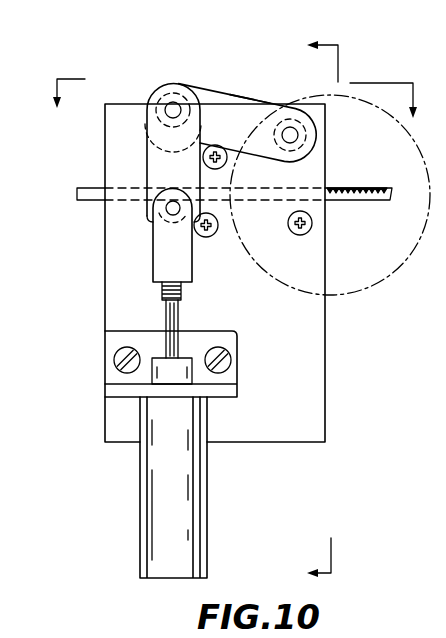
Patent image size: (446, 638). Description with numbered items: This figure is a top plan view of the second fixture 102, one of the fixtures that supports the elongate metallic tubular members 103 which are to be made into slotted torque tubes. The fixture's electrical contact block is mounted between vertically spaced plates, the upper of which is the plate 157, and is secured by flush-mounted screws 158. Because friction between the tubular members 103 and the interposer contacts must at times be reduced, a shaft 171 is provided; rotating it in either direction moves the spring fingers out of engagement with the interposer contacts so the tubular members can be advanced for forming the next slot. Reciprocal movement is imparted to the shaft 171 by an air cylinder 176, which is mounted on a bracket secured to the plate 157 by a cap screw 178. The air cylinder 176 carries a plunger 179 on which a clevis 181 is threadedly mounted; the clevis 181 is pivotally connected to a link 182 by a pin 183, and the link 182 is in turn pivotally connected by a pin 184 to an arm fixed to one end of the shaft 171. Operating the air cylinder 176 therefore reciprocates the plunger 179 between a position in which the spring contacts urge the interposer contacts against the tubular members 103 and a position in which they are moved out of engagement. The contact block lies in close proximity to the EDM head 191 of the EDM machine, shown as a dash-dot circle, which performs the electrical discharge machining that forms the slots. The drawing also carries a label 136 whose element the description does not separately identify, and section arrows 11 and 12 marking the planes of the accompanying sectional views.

The second fixture 102 is at (210, 78).
The tubular members 103 is at (93, 187).
The arm edge 136 is at (246, 100).
The plate 157 is at (297, 363).
The flush-mounted screws 158 is at (208, 240).
The shaft 171 is at (288, 107).
The air cylinder 176 is at (152, 458).
The cap screw 178 is at (112, 364).
The plunger 179 is at (163, 317).
The clevis 181 is at (160, 250).
The link 182 is at (160, 155).
The pin 183 is at (165, 213).
The pin 184 is at (167, 103).
The EDM head 191 is at (347, 296).
The section line 11- 11 is at (240, 95).
The section line 12- 12 is at (323, 299).